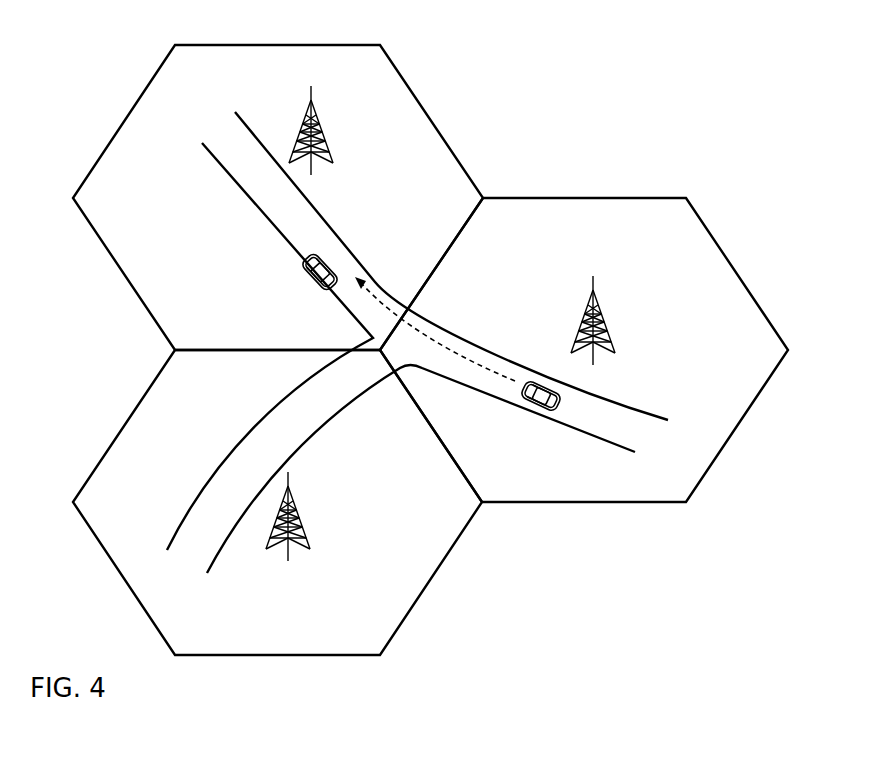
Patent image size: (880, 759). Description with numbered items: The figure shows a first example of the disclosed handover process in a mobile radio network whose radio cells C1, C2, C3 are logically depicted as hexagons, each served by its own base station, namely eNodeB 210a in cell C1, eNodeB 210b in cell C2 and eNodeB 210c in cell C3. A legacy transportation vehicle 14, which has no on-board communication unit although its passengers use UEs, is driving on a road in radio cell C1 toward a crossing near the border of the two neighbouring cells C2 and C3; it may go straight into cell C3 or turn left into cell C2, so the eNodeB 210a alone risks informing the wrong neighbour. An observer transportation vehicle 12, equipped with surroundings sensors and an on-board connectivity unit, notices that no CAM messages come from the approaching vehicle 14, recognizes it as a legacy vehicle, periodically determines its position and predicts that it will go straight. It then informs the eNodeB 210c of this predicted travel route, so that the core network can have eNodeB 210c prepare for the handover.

The observer transportation vehicle 12 is at (307, 257).
The legacy transportation vehicle 14 is at (560, 402).
The eNodeB of cell C1 210a is at (600, 318).
The eNodeB of cell C2 210b is at (296, 515).
The eNodeB of cell C3 210c is at (318, 135).
The radio cell C1 is at (731, 268).
The radio cell C2 is at (421, 590).
The radio cell C3 is at (414, 98).